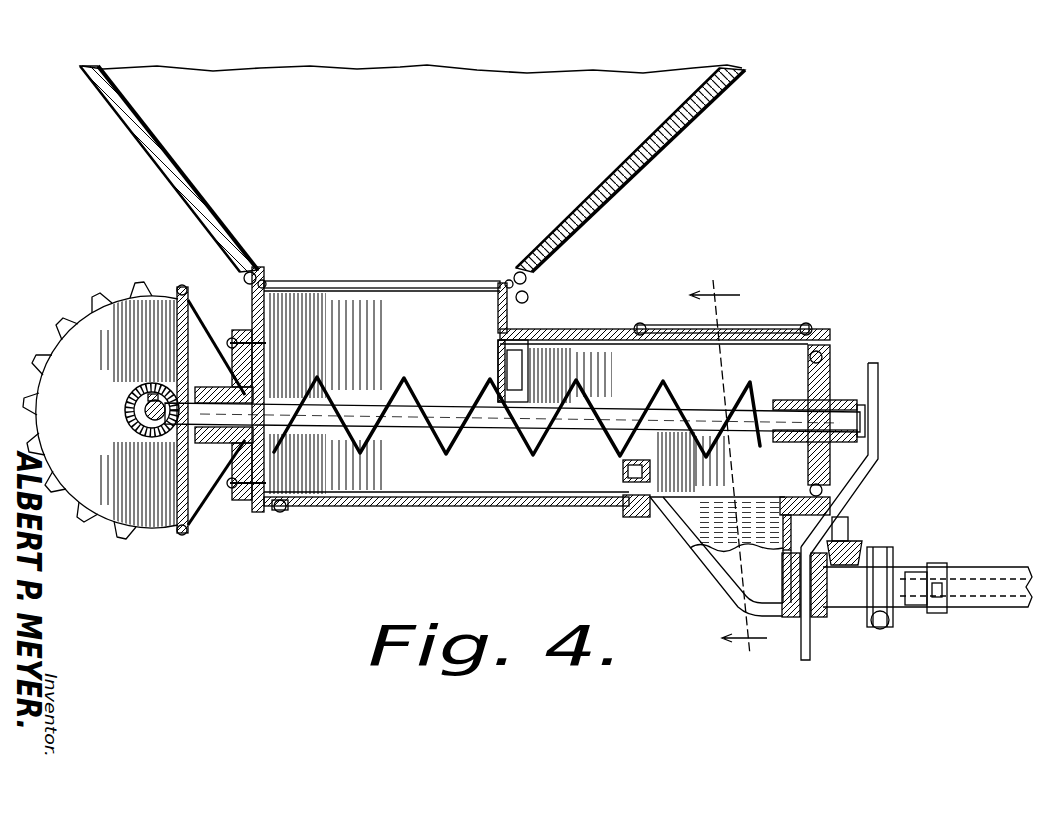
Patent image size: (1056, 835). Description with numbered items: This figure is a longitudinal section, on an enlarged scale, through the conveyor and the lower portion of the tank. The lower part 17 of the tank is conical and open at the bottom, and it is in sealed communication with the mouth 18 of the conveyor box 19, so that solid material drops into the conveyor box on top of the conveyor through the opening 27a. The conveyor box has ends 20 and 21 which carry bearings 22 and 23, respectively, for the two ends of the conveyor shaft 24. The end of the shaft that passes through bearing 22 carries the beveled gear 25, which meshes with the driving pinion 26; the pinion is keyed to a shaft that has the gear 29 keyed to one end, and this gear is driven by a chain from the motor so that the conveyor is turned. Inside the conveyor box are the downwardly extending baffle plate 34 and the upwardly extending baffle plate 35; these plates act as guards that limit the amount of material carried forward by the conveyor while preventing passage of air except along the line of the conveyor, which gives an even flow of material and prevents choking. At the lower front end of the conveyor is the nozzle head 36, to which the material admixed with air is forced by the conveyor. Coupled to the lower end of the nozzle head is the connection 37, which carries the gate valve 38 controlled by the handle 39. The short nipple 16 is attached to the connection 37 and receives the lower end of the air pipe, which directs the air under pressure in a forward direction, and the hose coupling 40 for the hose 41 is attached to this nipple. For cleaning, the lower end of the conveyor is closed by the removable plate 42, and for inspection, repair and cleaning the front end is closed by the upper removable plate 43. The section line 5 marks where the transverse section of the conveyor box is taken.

The section line 5— 5 is at (728, 465).
The short nipple 16 is at (852, 613).
The lower part of the tank 17 is at (412, 176).
The mouth of the conveyor box 18 is at (530, 299).
The conveyor box 19 is at (568, 340).
The end of the conveyor box 20 is at (236, 496).
The end of the conveyor box 21 is at (833, 360).
The bearing 22 is at (183, 522).
The bearing 23 is at (870, 412).
The conveyor shaft 24 is at (761, 434).
The beveled gear 25 is at (122, 515).
The driving pinion 26 is at (124, 412).
The opening 27a is at (425, 283).
The gear 29 is at (124, 397).
The downwardly extending baffle plate 34 is at (498, 358).
The upwardly extending baffle plate 35 is at (623, 469).
The nozzle head 36 is at (640, 518).
The connection 37 is at (818, 628).
The gate valve 38 is at (802, 662).
The handle 39 is at (872, 474).
The hose coupling 40 is at (882, 552).
The hose 41 is at (975, 600).
The removable plate 42 is at (440, 500).
The upper removable plate 43 is at (752, 332).